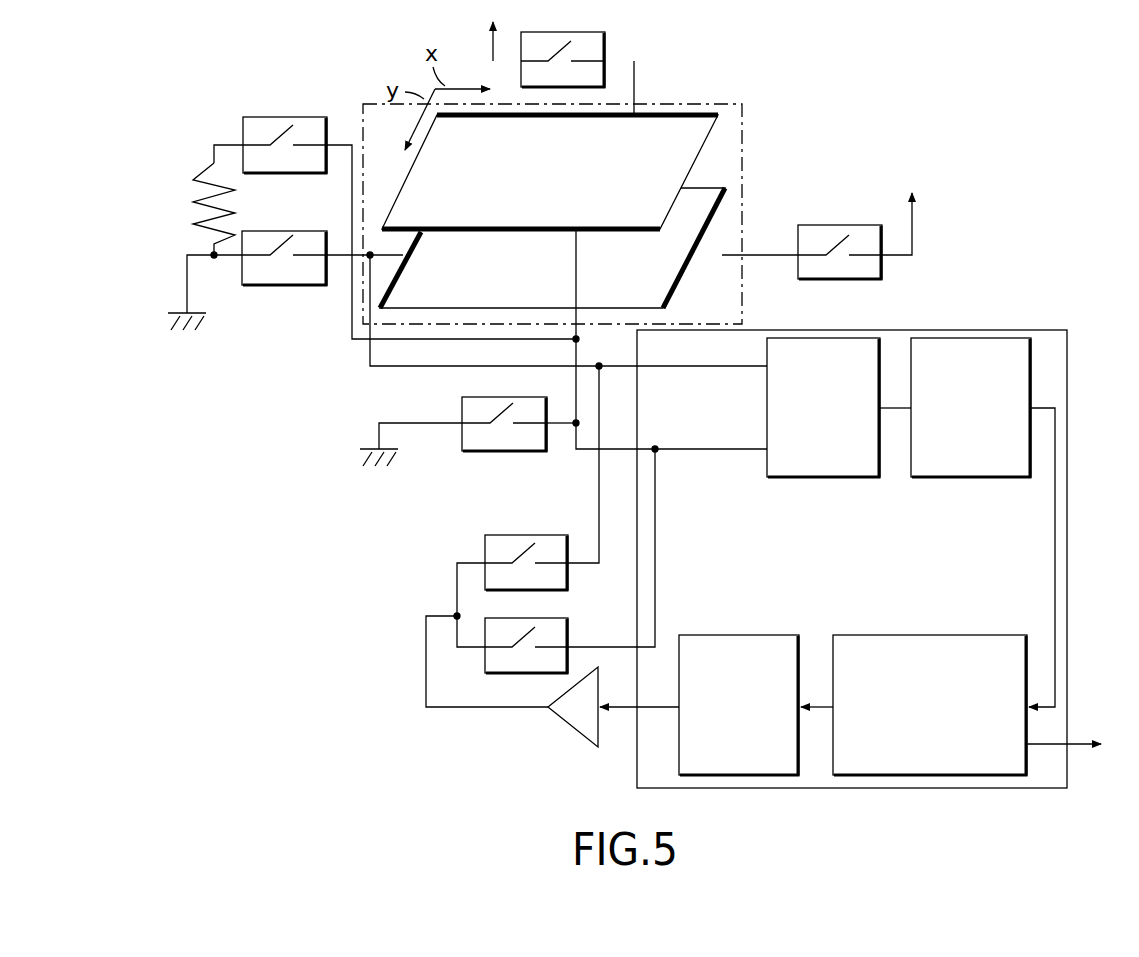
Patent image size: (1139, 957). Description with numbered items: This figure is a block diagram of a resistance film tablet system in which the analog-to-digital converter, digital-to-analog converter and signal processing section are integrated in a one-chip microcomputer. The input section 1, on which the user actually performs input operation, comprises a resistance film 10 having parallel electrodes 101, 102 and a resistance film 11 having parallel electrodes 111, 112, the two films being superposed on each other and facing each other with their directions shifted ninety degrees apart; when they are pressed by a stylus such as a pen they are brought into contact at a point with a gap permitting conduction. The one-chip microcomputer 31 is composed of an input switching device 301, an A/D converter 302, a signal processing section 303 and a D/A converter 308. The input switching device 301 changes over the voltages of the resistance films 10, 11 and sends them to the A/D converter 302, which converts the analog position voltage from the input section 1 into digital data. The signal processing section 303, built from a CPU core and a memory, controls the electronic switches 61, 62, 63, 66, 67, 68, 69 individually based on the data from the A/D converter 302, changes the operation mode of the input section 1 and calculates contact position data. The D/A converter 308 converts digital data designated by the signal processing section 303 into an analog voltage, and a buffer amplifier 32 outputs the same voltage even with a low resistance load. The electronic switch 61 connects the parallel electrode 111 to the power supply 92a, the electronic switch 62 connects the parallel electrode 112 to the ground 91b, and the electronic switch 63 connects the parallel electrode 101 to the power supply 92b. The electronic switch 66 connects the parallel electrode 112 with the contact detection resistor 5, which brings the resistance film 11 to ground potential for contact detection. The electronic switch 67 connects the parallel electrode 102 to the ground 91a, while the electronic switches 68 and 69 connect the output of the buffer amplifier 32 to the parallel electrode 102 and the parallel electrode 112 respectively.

The input section 1 is at (741, 104).
The contact detection resistor 5 is at (197, 190).
The resistance film 10 is at (668, 263).
The resistance film 11 is at (703, 138).
The parallel electrode 101 is at (725, 190).
The parallel electrode 102 is at (390, 290).
The parallel electrode 111 is at (676, 108).
The parallel electrode 112 is at (382, 229).
The one-chip microcomputer 31 is at (1068, 448).
The buffer amplifier 32 is at (565, 725).
The electronic switch 61 is at (608, 45).
The electronic switch 62 is at (510, 451).
The electronic switch 63 is at (858, 225).
The electronic switch 66 is at (312, 117).
The electronic switch 67 is at (252, 285).
The electronic switch 68 is at (552, 535).
The electronic switch 69 is at (568, 632).
The ground 91a is at (204, 326).
The ground 91b is at (360, 460).
The power supply 92a is at (492, 36).
The power supply 92b is at (912, 228).
The input switching device 301 is at (822, 477).
The A/D converter 302 is at (963, 477).
The signal processing section 303 is at (902, 635).
The D/A converter 308 is at (740, 635).